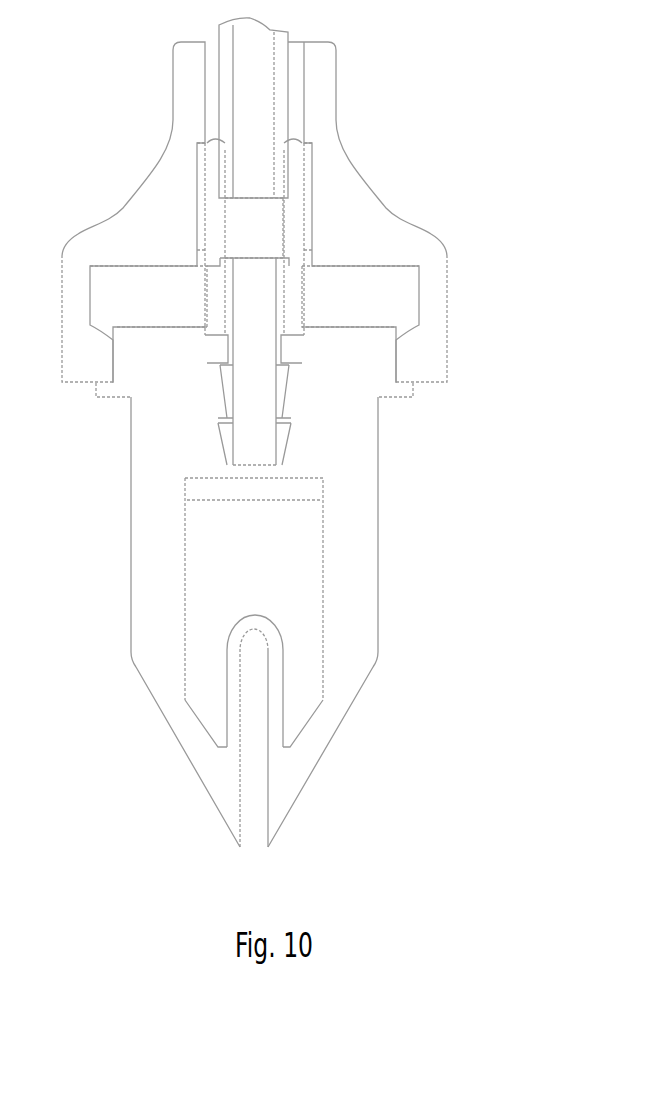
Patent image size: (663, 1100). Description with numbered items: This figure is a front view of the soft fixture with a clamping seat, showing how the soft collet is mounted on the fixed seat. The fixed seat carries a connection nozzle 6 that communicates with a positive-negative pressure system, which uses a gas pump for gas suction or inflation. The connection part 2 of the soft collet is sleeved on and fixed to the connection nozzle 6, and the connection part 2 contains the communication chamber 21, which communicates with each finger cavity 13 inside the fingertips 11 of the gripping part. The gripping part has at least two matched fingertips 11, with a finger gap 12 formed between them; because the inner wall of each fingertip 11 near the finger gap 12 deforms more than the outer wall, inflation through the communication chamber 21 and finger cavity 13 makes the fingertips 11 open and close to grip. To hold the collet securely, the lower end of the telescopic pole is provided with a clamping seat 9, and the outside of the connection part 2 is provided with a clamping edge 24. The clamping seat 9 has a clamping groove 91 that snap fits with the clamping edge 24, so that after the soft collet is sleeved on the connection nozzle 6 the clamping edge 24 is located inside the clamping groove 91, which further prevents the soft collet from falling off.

The clamping seat 9 is at (442, 289).
The clamping groove 91 is at (409, 322).
The connection part 2 is at (354, 493).
The communication chamber 21 is at (271, 525).
The clamping edge 24 is at (106, 396).
The connection nozzle 6 is at (225, 334).
The finger cavity 13 is at (307, 699).
The fingertips 11 is at (307, 757).
The finger gap 12 is at (255, 768).